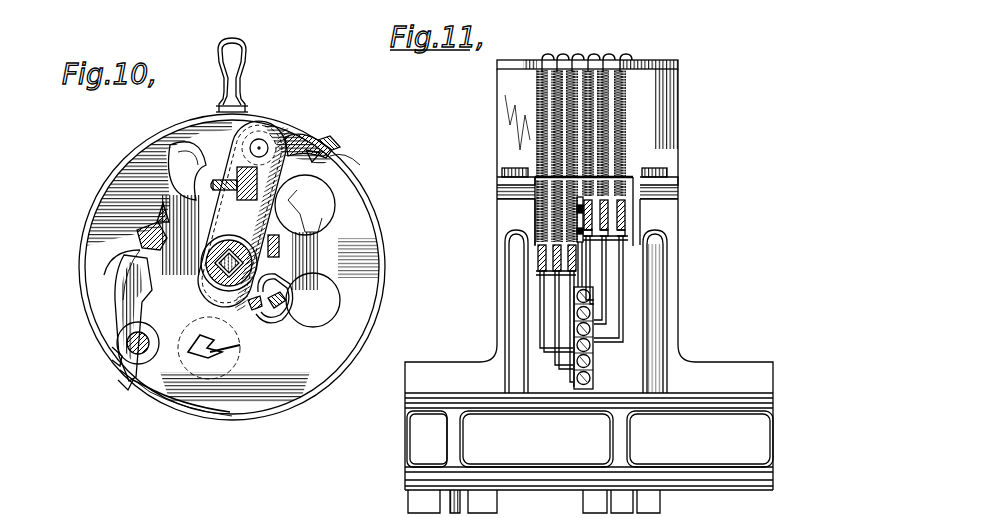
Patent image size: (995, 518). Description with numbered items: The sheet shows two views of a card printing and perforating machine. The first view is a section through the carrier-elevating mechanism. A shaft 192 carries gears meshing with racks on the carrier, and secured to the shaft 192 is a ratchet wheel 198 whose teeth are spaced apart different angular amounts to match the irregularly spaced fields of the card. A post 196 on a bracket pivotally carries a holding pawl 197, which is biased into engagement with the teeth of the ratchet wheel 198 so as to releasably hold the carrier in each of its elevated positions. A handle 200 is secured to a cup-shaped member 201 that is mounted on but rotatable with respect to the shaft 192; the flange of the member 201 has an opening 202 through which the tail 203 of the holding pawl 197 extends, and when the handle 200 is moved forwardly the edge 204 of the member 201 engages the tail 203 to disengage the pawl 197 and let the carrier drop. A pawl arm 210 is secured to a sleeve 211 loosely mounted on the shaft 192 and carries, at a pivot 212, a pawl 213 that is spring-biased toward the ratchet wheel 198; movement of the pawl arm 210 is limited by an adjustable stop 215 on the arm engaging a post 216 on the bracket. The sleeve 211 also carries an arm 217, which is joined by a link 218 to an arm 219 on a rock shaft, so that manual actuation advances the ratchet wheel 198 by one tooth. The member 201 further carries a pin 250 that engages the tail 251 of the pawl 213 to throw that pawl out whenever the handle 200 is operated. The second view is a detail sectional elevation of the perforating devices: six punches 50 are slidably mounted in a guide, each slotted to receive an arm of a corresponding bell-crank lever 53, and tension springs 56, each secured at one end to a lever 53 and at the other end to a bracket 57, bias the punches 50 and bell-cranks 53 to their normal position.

In FIG. 10, the handle 200 is at (232, 82).
In FIG. 10, the cup-shaped member 201 is at (263, 120).
In FIG. 10, the pivot 212 is at (268, 145).
In FIG. 10, the pin 250 is at (330, 146).
In FIG. 10, the tail 251 is at (280, 165).
In FIG. 10, the pawl arm 210 is at (366, 176).
In FIG. 10, the ratchet wheel 198 is at (243, 208).
In FIG. 10, the sleeve 211 is at (284, 205).
In FIG. 10, the arm 219 is at (280, 246).
In FIG. 10, the link 218 is at (283, 294).
In FIG. 10, the pawl 213 is at (240, 170).
In FIG. 10, the adjustable stop 215 is at (160, 216).
In FIG. 10, the post 216 is at (110, 218).
In FIG. 10, the holding pawl 197 is at (127, 300).
In FIG. 10, the post 196 is at (127, 342).
In FIG. 10, the edge 204 is at (112, 350).
In FIG. 10, the tail 203 is at (124, 378).
In FIG. 10, the opening 202 is at (138, 384).
In FIG. 10, the shaft 192 is at (210, 272).
In FIG. 10, the arm 217 is at (233, 307).
In FIG. 11, the bracket 57 is at (663, 66).
In FIG. 11, the tension springs 56 is at (597, 140).
In FIG. 11, the bell-crank levers 53 is at (622, 283).
In FIG. 11, the punches 50 is at (593, 375).